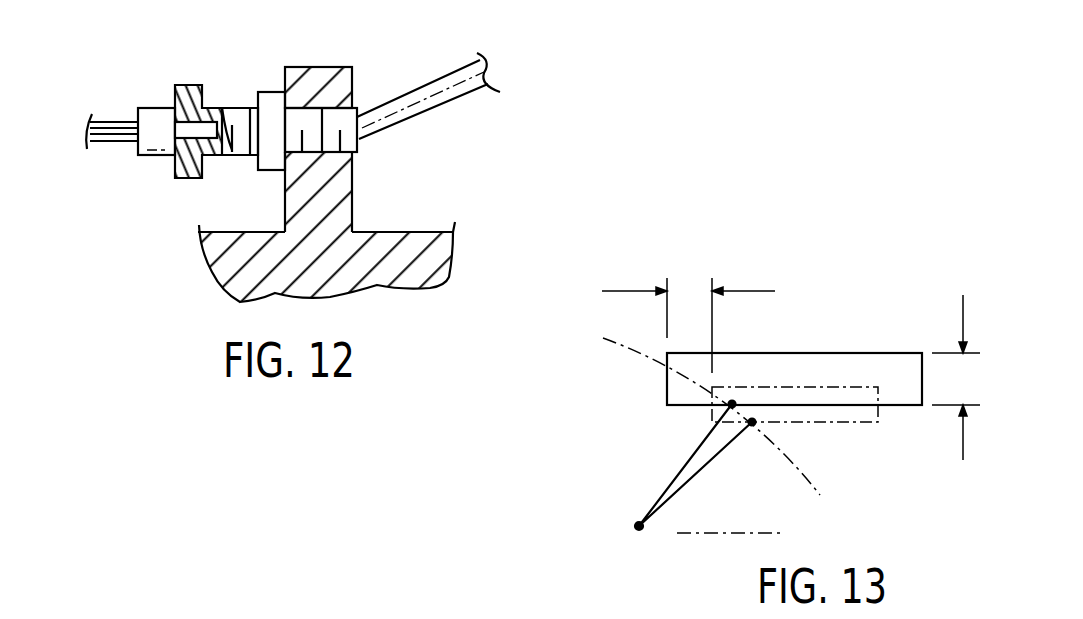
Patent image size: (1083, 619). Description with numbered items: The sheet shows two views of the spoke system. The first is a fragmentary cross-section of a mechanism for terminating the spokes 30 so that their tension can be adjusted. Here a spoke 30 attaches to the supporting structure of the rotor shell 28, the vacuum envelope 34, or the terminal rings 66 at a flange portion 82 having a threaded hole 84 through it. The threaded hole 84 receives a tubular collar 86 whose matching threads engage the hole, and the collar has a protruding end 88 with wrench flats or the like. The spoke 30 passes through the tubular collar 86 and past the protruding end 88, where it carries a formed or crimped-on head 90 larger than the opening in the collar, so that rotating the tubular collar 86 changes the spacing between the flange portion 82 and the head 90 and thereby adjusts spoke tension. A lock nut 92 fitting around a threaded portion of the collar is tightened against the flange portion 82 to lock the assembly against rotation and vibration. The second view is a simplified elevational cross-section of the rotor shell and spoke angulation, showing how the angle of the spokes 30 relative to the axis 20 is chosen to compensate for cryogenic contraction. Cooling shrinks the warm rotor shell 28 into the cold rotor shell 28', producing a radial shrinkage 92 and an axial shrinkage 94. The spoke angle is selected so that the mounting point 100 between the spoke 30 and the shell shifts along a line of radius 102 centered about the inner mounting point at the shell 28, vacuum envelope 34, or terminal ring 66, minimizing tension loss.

In FIG. 13, the axis 20 is at (727, 537).
In FIG. 12, the rotor shell 28 is at (373, 243).
In FIG. 13, the rotor shell 28 is at (687, 413).
In FIG. 13, the rotor shell at cryogenic temperatures 28' is at (801, 439).
In FIG. 12, the spoke 30 is at (430, 92).
In FIG. 13, the spoke 30 is at (692, 476).
In FIG. 12, the vacuum envelope 34 is at (373, 243).
In FIG. 13, the vacuum envelope 34 is at (548, 509).
In FIG. 12, the spoke terminal ring 66 is at (370, 226).
In FIG. 13, the spoke terminal ring 66 is at (630, 517).
In FIG. 12, the flange portion 82 is at (310, 70).
In FIG. 12, the threaded hole 84 is at (343, 173).
In FIG. 12, the tubular collar 86 is at (192, 82).
In FIG. 12, the protruding end 88 is at (150, 80).
In FIG. 12, the head 90 is at (147, 108).
In FIG. 12, the lock nut 92 is at (275, 94).
In FIG. 13, the lock nut 92 is at (962, 318).
In FIG. 13, the axial shrinkage 94 is at (752, 290).
In FIG. 13, the mounting point 100 is at (754, 419).
In FIG. 13, the line of radius 102 is at (827, 501).